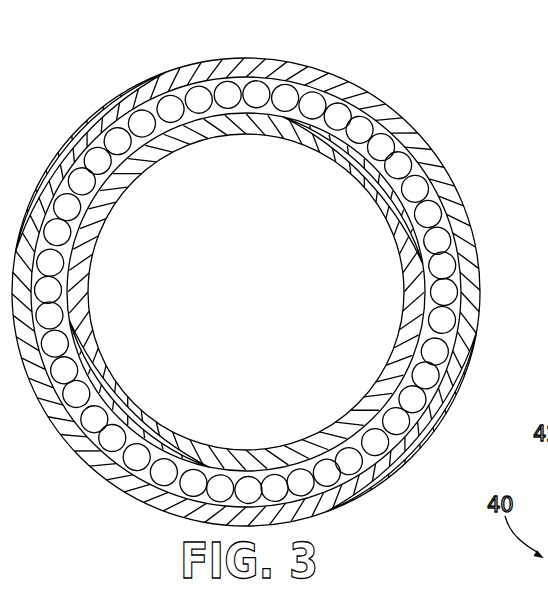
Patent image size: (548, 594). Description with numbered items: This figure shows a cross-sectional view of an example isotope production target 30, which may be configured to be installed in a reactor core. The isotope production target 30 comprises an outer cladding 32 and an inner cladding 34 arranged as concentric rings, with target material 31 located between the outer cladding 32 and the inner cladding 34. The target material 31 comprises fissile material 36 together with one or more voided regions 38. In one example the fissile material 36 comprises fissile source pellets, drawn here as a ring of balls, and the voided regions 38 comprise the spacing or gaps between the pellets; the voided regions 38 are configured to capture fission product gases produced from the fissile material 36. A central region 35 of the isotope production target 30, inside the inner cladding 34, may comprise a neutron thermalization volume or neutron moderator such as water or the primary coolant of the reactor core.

The isotope production target 30 is at (262, 268).
The target material 31 is at (278, 276).
The outer cladding 32 is at (245, 56).
The inner cladding 34 is at (247, 451).
The central region 35 is at (258, 295).
The fissile material 36 is at (336, 122).
The voided regions 38 is at (150, 456).